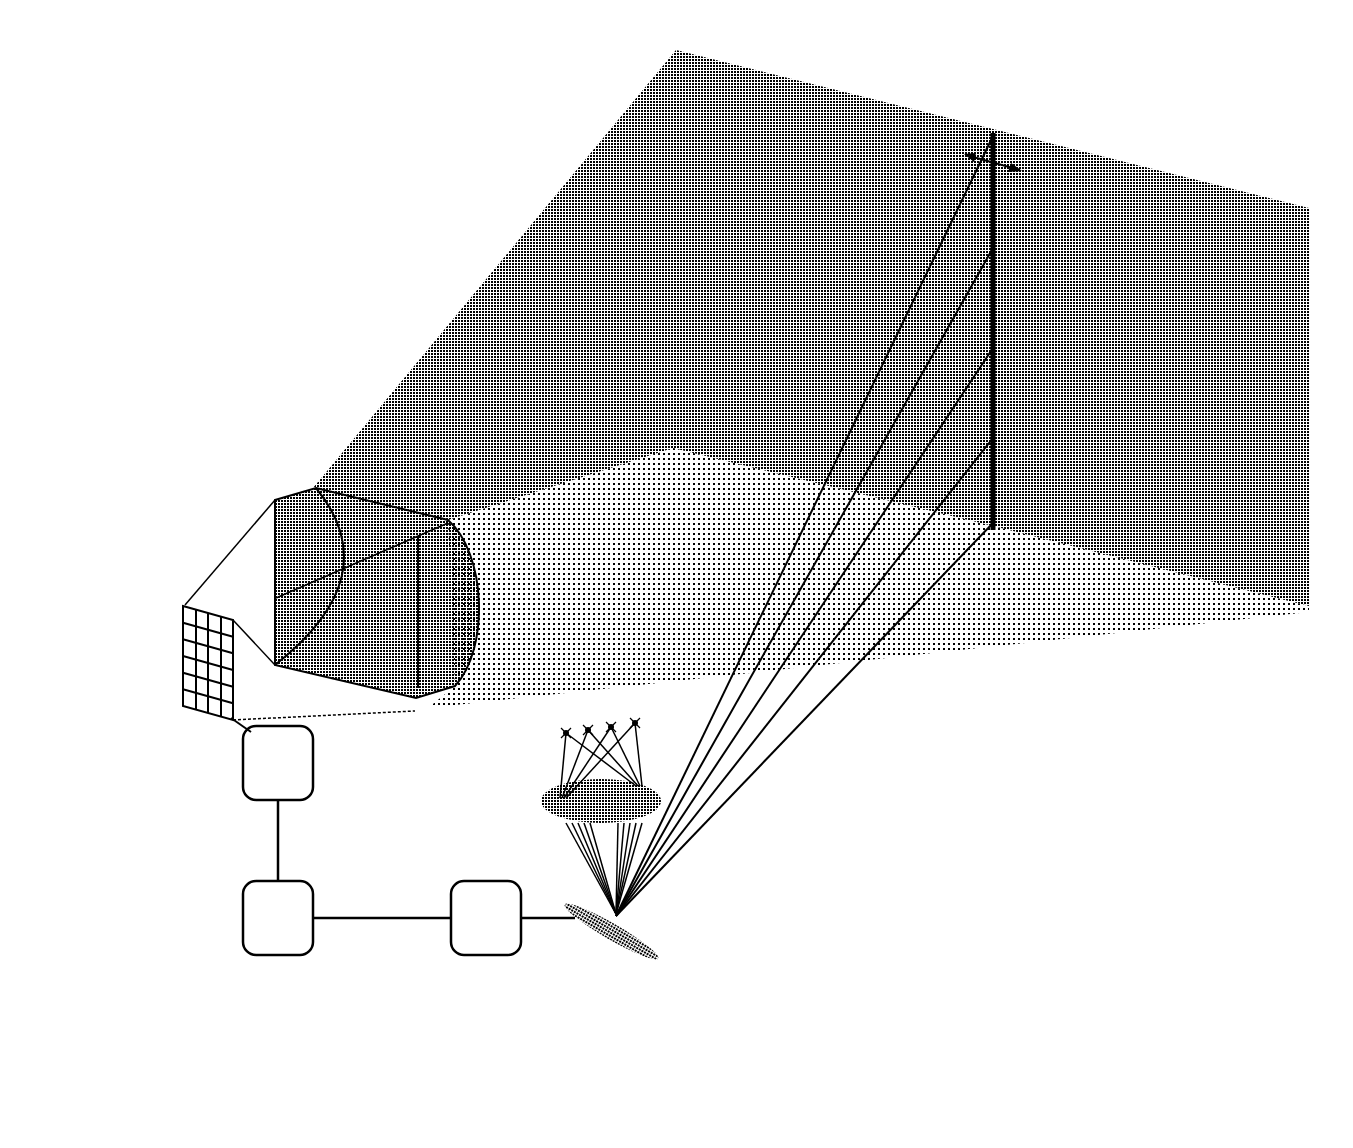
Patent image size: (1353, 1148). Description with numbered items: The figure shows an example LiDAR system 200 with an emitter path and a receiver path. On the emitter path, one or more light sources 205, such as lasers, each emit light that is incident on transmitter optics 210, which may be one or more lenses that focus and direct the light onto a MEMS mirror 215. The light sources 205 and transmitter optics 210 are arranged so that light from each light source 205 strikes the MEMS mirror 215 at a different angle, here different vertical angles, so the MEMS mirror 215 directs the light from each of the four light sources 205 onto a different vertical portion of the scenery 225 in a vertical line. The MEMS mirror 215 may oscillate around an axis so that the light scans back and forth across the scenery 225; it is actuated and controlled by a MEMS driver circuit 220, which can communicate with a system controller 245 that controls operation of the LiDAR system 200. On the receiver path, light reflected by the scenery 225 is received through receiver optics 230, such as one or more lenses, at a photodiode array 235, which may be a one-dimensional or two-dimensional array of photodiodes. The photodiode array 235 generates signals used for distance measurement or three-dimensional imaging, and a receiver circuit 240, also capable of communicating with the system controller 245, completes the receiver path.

The LiDAR system 200 is at (212, 103).
The light sources 205 is at (601, 745).
The transmitter optics 210 is at (576, 801).
The MEMS mirror 215 is at (599, 932).
The MEMS driver circuit 220 is at (486, 918).
The scenery 225 is at (787, 161).
The receiver optics 230 is at (332, 586).
The photodiode array 235 is at (217, 679).
The receiver circuit 240 is at (278, 763).
The system controller 245 is at (278, 918).